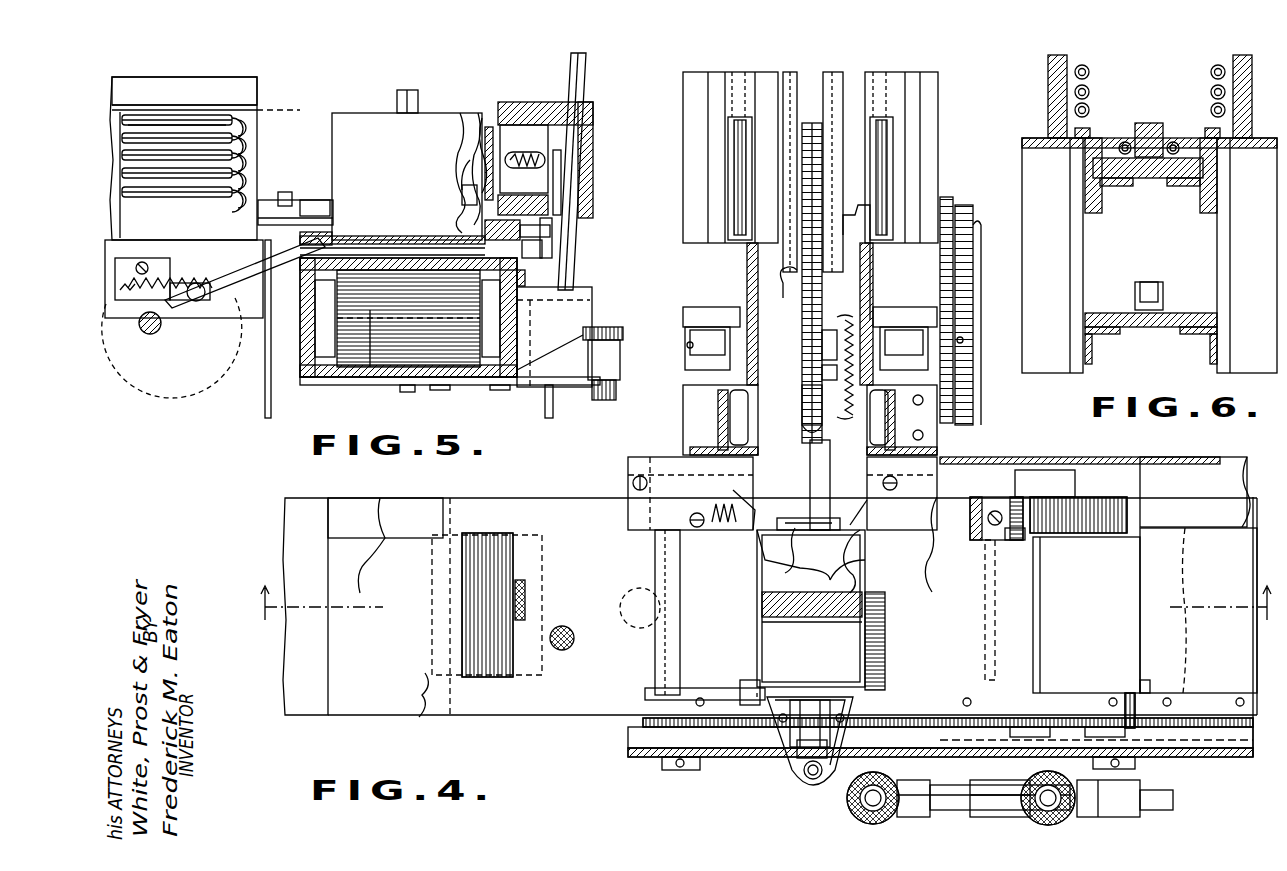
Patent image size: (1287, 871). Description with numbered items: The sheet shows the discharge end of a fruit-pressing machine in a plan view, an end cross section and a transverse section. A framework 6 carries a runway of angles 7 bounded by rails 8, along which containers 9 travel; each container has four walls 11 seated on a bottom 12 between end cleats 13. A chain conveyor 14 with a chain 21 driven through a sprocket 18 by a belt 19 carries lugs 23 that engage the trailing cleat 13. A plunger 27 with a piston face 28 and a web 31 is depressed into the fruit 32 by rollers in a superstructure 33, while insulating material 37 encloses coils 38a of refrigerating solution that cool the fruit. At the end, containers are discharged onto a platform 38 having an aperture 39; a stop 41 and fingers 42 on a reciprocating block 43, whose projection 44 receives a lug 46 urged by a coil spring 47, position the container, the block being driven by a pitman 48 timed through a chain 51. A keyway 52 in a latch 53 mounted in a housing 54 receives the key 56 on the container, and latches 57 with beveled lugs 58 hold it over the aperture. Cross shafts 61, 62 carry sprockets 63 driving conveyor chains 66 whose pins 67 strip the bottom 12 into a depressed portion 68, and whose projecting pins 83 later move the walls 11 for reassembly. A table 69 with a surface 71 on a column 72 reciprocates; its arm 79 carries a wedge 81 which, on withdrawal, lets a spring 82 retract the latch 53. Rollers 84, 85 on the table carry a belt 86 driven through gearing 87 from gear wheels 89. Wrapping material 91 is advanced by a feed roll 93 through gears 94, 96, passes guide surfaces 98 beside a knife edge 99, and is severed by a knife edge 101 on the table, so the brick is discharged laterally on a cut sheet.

In FIG. 6, the framework 6 is at (1085, 197).
In FIG. 5, the angles 7 is at (285, 195).
In FIG. 6, the angles 7 is at (1110, 136).
In FIG. 4, the angles 7 is at (767, 85).
In FIG. 5, the rails 8 is at (175, 236).
In FIG. 6, the rails 8 is at (1085, 128).
In FIG. 4, the rails 8 is at (748, 158).
In FIG. 5, the container 9 is at (355, 112).
In FIG. 4, the container 9 is at (757, 568).
In FIG. 5, the walls 11 is at (407, 176).
In FIG. 4, the walls 11 is at (770, 548).
In FIG. 5, the bottom 12 is at (360, 236).
In FIG. 4, the bottom 12 is at (1198, 610).
In FIG. 5, the end cleats 13 is at (325, 232).
In FIG. 4, the end cleats 13 is at (810, 530).
In FIG. 5, the chain conveyor 14 is at (135, 398).
In FIG. 4, the chain conveyor 14 is at (822, 188).
In FIG. 5, the second sprocket 18 is at (185, 392).
In FIG. 4, the second sprocket 18 is at (813, 477).
In FIG. 4, the belt 19 is at (965, 248).
In FIG. 6, the chain 21 is at (1145, 128).
In FIG. 4, the chain 21 is at (812, 266).
In FIG. 5, the lugs 23 is at (280, 329).
In FIG. 4, the lugs 23 is at (812, 396).
In FIG. 5, the plunger 27 is at (418, 92).
In FIG. 4, the plunger 27 is at (762, 595).
In FIG. 5, the piston face 28 is at (462, 165).
In FIG. 4, the piston face 28 is at (762, 630).
In FIG. 5, the web 31 is at (405, 100).
In FIG. 4, the web 31 is at (852, 608).
In FIG. 5, the fruit 32 is at (468, 190).
In FIG. 5, the superstructure 33 is at (165, 100).
In FIG. 6, the superstructure 33 is at (1238, 60).
In FIG. 4, the superstructure 33 is at (740, 90).
In FIG. 5, the insulating material 37 is at (113, 147).
In FIG. 6, the insulating material 37 is at (1055, 80).
In FIG. 4, the insulating material 37 is at (712, 135).
In FIG. 5, the platform 38 is at (560, 262).
In FIG. 4, the platform 38 is at (730, 415).
In FIG. 5, the coils 38a is at (202, 124).
In FIG. 6, the coils 38a is at (1085, 72).
In FIG. 4, the coils 38a is at (878, 418).
In FIG. 5, the aperture 39 is at (385, 236).
In FIG. 4, the aperture 39 is at (862, 572).
In FIG. 5, the stop 41 is at (540, 250).
In FIG. 4, the stop 41 is at (705, 692).
In FIG. 5, the fingers 42 is at (245, 270).
In FIG. 4, the fingers 42 is at (800, 518).
In FIG. 5, the reciprocating block 43 is at (200, 300).
In FIG. 5, the projection 44 is at (178, 300).
In FIG. 4, the projection 44 is at (835, 358).
In FIG. 5, the lug 46 is at (150, 295).
In FIG. 4, the lug 46 is at (830, 375).
In FIG. 5, the coil spring 47 is at (148, 292).
In FIG. 4, the coil spring 47 is at (838, 315).
In FIG. 4, the pitman 48 is at (845, 230).
In FIG. 4, the chain 51 is at (955, 212).
In FIG. 5, the keyway 52 is at (489, 126).
In FIG. 4, the keyway 52 is at (812, 700).
In FIG. 5, the latch 53 is at (520, 128).
In FIG. 4, the latch 53 is at (805, 750).
In FIG. 5, the housing 54 is at (594, 180).
In FIG. 4, the housing 54 is at (830, 775).
In FIG. 5, the key 56 is at (482, 125).
In FIG. 5, the latches 57 is at (295, 205).
In FIG. 4, the latches 57 is at (628, 483).
In FIG. 5, the beveled lug 58 is at (318, 202).
In FIG. 4, the beveled lug 58 is at (722, 522).
In FIG. 4, the cross shaft 61 is at (670, 773).
In FIG. 4, the cross shaft 62 is at (1135, 768).
In FIG. 4, the sprockets 63 is at (655, 727).
In FIG. 5, the conveyor chains 66 is at (560, 281).
In FIG. 4, the conveyor chains 66 is at (734, 745).
In FIG. 5, the pins 67 is at (552, 235).
In FIG. 4, the pins 67 is at (1140, 722).
In FIG. 4, the depressed portion 68 is at (1086, 615).
In FIG. 5, the table 69 is at (316, 378).
In FIG. 4, the table 69 is at (530, 702).
In FIG. 5, the surface 71 is at (380, 270).
In FIG. 4, the surface 71 is at (505, 591).
In FIG. 4, the column 72 is at (625, 630).
In FIG. 5, the arm 79 is at (570, 175).
In FIG. 4, the arm 79 is at (808, 778).
In FIG. 5, the wedge 81 is at (560, 142).
In FIG. 5, the spring 82 is at (533, 152).
In FIG. 5, the projecting pins 83 is at (535, 230).
In FIG. 4, the projecting pins 83 is at (755, 688).
In FIG. 5, the roller 84 is at (372, 378).
In FIG. 4, the roller 85 is at (422, 715).
In FIG. 5, the belt 86 is at (430, 362).
In FIG. 4, the belt 86 is at (546, 597).
In FIG. 4, the gearing 87 is at (865, 812).
In FIG. 4, the gear wheels 89 is at (900, 812).
In FIG. 4, the wrapping material 91 is at (630, 585).
In FIG. 4, the feed roll 93 is at (1085, 500).
In FIG. 4, the gear 94 is at (1070, 812).
In FIG. 4, the gear 96 is at (1030, 780).
In FIG. 4, the guide surfaces 98 is at (1018, 530).
In FIG. 4, the knife edge 99 is at (975, 545).
In FIG. 4, the knife edge 101 is at (943, 546).